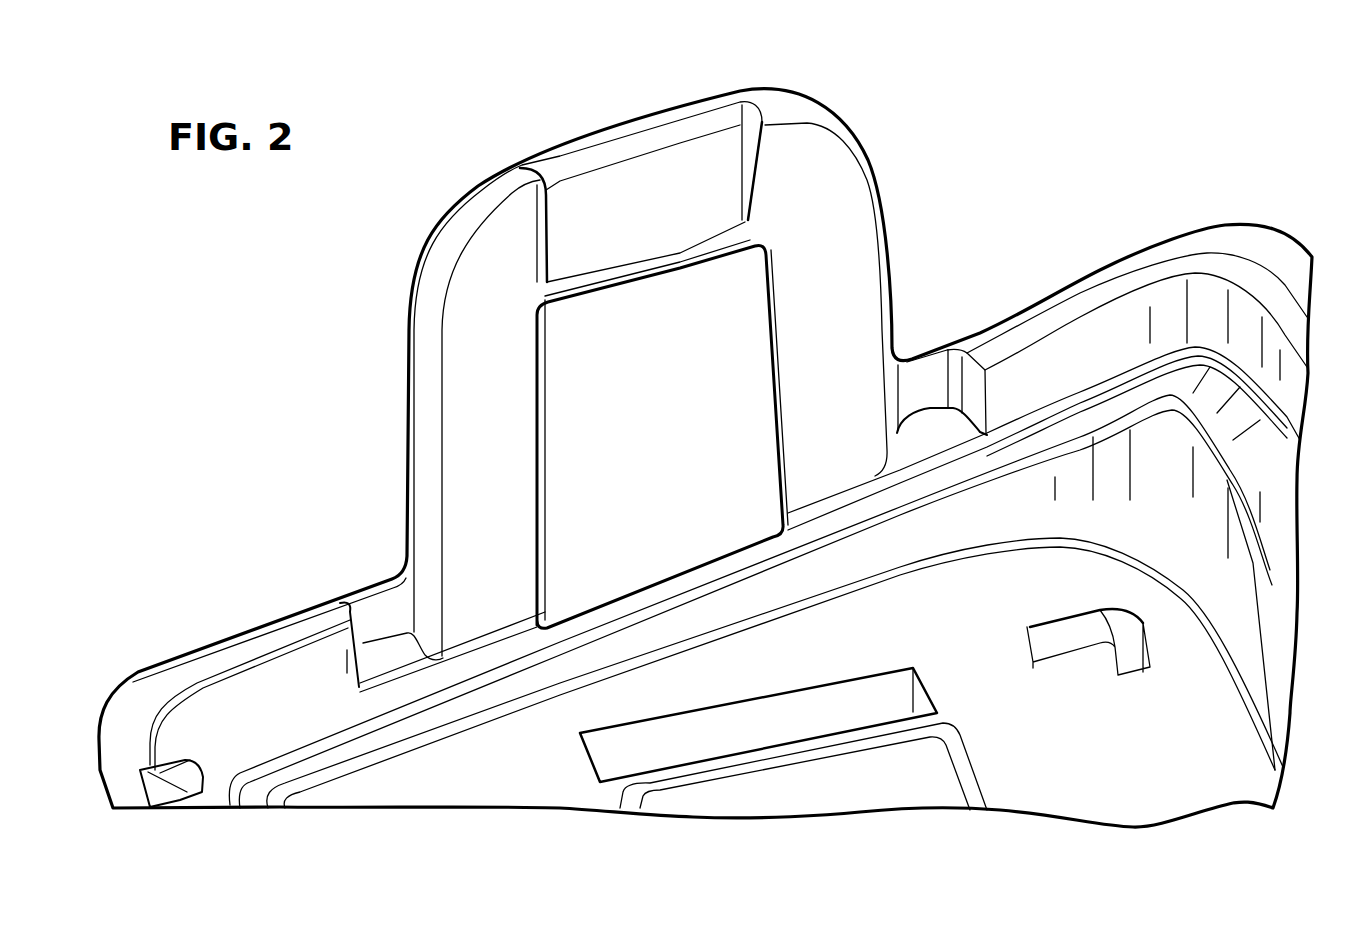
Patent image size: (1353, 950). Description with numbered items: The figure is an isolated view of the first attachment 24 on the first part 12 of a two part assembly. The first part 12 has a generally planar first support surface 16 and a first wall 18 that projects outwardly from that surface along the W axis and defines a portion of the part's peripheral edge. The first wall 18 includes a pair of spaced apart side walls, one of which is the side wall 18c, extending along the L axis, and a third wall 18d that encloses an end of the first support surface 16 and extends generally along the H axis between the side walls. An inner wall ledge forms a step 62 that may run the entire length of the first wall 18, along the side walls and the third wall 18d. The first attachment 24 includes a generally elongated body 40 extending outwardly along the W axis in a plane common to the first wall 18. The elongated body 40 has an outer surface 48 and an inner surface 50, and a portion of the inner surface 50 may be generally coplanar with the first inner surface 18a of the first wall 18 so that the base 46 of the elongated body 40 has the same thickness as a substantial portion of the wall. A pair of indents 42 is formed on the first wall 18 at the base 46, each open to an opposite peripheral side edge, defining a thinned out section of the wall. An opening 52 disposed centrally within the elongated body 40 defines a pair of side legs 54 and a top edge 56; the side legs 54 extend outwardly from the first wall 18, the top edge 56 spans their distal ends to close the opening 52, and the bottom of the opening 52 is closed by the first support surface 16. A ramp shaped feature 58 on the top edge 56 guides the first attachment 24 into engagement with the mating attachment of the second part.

The first part 12 is at (1100, 127).
The first support surface 16 is at (775, 674).
The first wall 18 is at (1143, 228).
The first inner surface 18a is at (984, 391).
The side wall 18c is at (930, 357).
The third wall 18d is at (203, 655).
The first attachment 24 is at (846, 91).
The elongated body 40 is at (952, 162).
The indent 42 is at (400, 653).
The base 46 is at (785, 483).
The outer surface 48 is at (420, 240).
The inner surface 50 is at (455, 300).
The opening 52 is at (662, 436).
The side legs 54 is at (440, 375).
The top edge 56 is at (630, 268).
The ramp shaped feature 58 is at (641, 202).
The step 62 is at (537, 648).